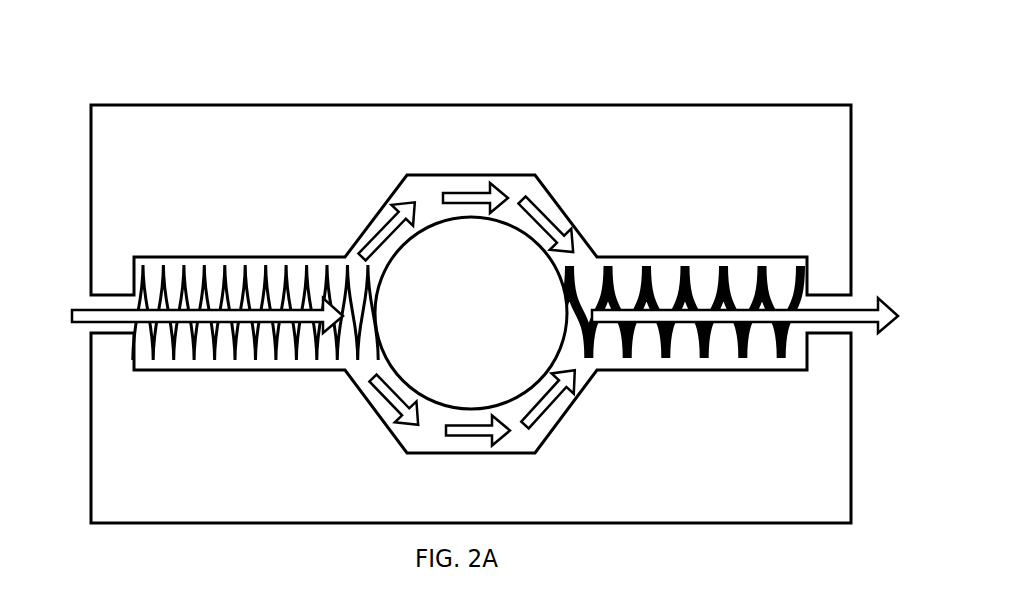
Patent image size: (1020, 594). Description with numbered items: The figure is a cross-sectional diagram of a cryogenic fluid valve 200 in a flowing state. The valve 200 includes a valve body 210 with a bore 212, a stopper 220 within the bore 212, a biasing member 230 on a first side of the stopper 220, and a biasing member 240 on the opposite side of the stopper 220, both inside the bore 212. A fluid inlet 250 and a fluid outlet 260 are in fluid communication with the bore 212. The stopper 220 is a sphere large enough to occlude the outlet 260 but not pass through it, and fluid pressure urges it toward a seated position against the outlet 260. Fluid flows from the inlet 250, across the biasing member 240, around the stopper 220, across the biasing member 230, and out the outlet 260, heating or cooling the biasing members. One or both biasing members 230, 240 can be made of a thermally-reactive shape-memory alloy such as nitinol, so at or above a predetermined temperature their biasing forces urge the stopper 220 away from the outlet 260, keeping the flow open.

The cryogenic fluid valve 200 is at (102, 70).
The valve body 210 is at (828, 146).
The bore 212 is at (398, 190).
The stopper 220 is at (487, 326).
The biasing member 230 is at (713, 272).
The biasing member 240 is at (218, 278).
The fluid inlet 250 is at (84, 295).
The fluid outlet 260 is at (858, 295).